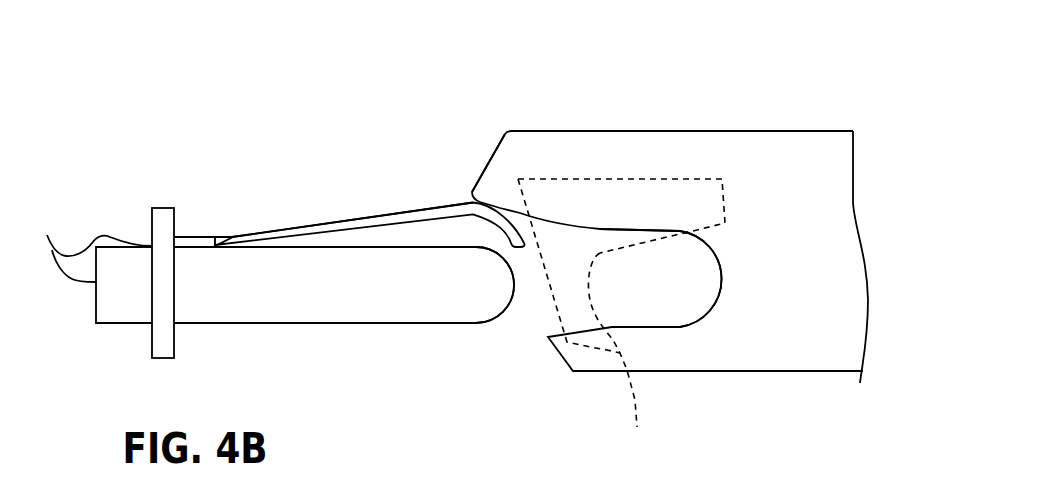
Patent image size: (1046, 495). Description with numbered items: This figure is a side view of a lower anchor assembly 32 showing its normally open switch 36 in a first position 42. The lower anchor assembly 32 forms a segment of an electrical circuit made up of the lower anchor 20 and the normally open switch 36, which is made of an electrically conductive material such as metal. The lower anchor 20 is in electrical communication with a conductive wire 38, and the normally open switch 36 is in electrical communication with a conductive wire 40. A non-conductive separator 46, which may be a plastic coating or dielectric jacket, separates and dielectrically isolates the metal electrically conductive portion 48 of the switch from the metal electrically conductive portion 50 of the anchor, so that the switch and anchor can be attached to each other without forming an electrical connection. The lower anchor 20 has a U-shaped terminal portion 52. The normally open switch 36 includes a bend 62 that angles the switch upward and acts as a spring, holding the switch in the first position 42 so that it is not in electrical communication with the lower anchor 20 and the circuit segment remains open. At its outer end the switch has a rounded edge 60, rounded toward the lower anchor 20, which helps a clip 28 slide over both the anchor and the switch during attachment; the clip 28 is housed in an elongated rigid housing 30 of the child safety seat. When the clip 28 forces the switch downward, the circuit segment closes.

The lower anchor 20 is at (368, 332).
The clip 28 is at (621, 317).
The elongated rigid housing 30 is at (752, 330).
The lower anchor assembly 32 is at (370, 169).
The normally open switch 36 is at (335, 220).
The conductive wire 38 is at (84, 283).
The conductive wire 40 is at (147, 246).
The first position 42 is at (667, 254).
The non-conductive separator 46 is at (192, 241).
The electrically conductive portion 48 is at (367, 218).
The electrically conductive portion 50 is at (302, 283).
The U-shaped terminal portion 52 is at (512, 303).
The rounded edge 60 is at (528, 218).
The bend 62 is at (222, 244).